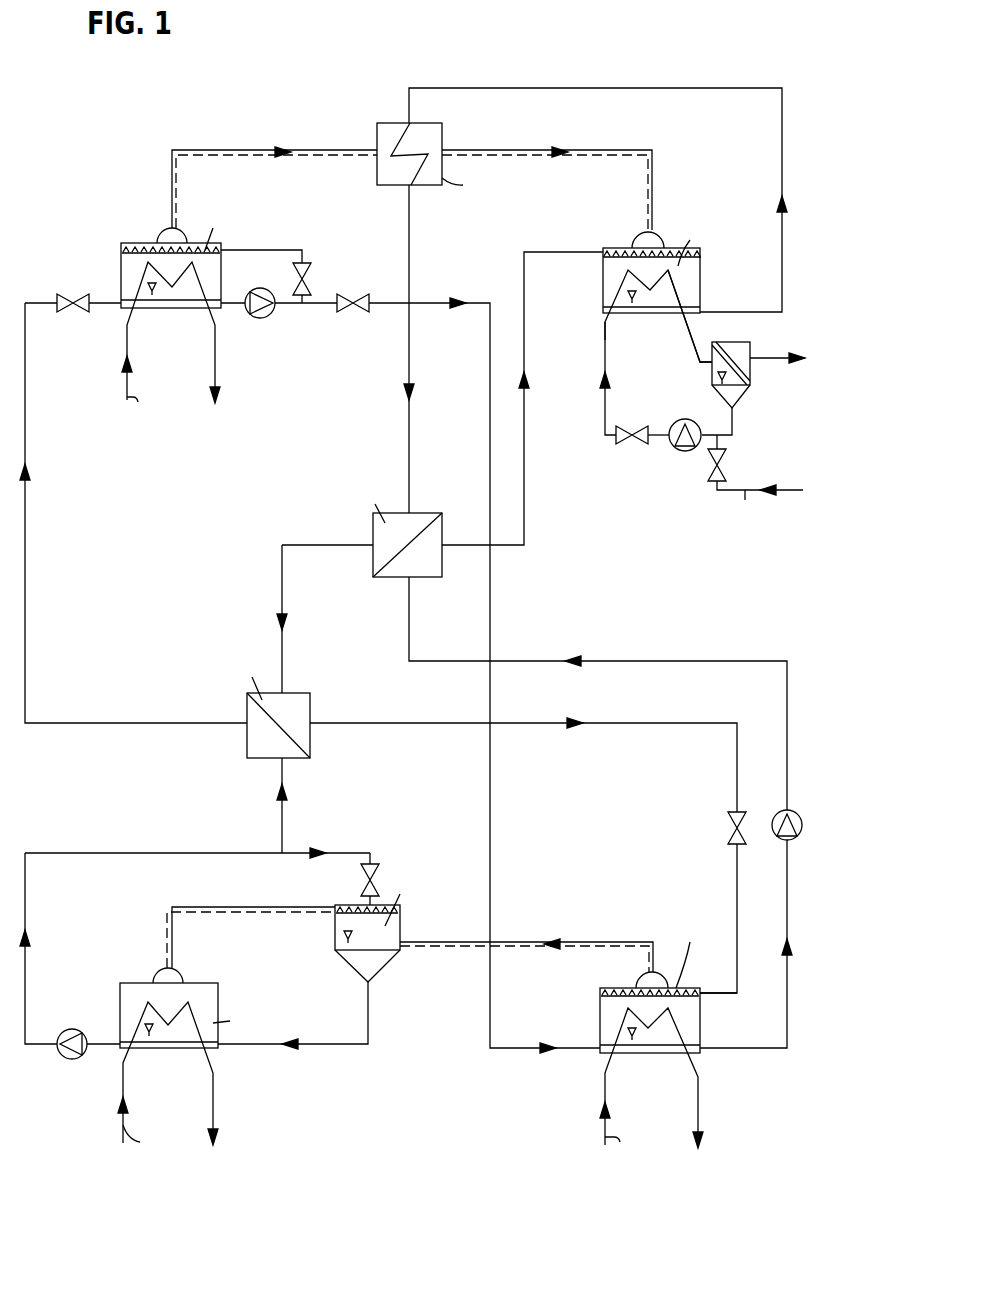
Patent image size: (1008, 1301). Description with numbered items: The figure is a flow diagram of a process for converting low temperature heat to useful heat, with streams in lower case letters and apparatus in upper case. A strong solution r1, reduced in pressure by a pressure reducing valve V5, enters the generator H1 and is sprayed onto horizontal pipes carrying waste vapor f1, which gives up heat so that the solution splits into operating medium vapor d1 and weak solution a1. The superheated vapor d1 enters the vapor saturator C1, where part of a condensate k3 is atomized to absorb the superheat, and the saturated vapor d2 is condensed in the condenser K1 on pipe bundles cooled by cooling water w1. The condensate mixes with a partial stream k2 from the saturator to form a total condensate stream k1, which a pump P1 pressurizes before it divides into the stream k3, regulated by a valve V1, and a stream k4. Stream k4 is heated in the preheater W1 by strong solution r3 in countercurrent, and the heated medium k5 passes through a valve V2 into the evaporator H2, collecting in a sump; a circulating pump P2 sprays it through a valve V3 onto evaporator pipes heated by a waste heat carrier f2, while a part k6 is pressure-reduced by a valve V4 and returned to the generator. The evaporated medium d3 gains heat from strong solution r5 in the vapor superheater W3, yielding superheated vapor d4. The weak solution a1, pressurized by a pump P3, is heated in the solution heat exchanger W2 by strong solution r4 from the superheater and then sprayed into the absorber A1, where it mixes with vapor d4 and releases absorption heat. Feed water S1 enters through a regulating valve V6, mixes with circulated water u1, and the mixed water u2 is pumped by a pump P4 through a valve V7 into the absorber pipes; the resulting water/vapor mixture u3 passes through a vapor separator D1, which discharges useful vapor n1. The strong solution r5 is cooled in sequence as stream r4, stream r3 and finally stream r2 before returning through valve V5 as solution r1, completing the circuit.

The evaporator H2 is at (121, 263).
The valve V2 is at (67, 296).
The valve V3 is at (310, 281).
The valve V4 is at (350, 295).
The circulating pump P2 is at (266, 318).
The vapor superheater W3 is at (390, 171).
The absorber A1 is at (621, 248).
The vapor separator D1 is at (739, 352).
The valve V7 is at (634, 426).
The pump P4 is at (684, 452).
The regulating valve V6 is at (726, 479).
The solution heat exchanger W2 is at (380, 556).
The preheater W1 is at (297, 716).
The pressure reducing valve V5 is at (730, 824).
The pump P3 is at (790, 823).
The valve V1 is at (361, 877).
The vapor saturator C1 is at (378, 966).
The condenser K1 is at (208, 1001).
The pump P1 is at (71, 1064).
The generator H1 is at (610, 1013).
The evaporated operating medium d3 is at (176, 212).
The superheated vapor d4 is at (445, 153).
The strong solution r5 is at (409, 106).
The strong solution r4 is at (409, 212).
The heated operating medium k5 is at (30, 358).
The partial stream of liquid operating medium k6 is at (310, 315).
The waste heat carrier f2 is at (145, 400).
The weak solution a1 is at (586, 255).
The circulated water u1 is at (734, 422).
The mixed water u2 is at (605, 341).
The water/vapor mixture u3 is at (693, 341).
The useful vapor n1 is at (770, 364).
The feed water S1 is at (747, 511).
The strong solution r3 is at (282, 686).
The strong solution r2 is at (325, 729).
The liquid operating medium partial stream k4 is at (284, 780).
The total condensate stream k1 is at (225, 853).
The condensate partial stream k3 is at (363, 853).
The saturated operating medium vapor d2 is at (286, 911).
The partial stream k2 is at (370, 1022).
The operating medium vapor d1 is at (598, 943).
The strong solution r1 is at (707, 997).
The cooling water w1 is at (147, 1140).
The waste vapor f1 is at (626, 1140).